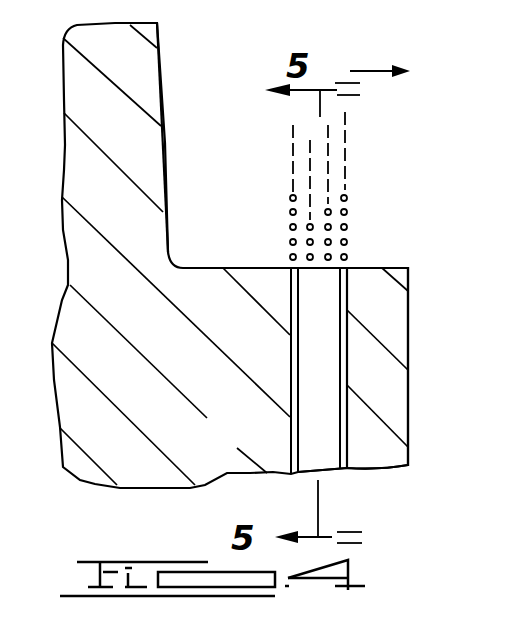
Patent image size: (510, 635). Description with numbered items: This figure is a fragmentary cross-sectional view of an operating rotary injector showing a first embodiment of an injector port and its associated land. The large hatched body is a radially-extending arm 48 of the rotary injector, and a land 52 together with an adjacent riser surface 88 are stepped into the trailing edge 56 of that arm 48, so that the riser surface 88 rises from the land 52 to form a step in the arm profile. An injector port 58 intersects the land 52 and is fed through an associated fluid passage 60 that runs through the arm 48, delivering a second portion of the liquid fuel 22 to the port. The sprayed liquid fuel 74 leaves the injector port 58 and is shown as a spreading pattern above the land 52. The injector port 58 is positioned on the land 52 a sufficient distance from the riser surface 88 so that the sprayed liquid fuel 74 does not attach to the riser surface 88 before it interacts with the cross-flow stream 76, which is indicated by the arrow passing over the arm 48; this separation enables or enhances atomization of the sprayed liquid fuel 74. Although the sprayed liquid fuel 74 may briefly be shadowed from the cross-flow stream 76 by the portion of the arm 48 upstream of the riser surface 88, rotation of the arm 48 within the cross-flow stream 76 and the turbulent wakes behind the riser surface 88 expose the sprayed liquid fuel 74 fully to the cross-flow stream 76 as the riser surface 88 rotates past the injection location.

The liquid fuel 22 is at (290, 437).
The radially-extending arm 48 is at (78, 138).
The land 52 is at (385, 268).
The trailing edge 56 is at (412, 355).
The injector port 58 is at (291, 264).
The fluid passage 60 is at (338, 474).
The sprayed liquid fuel 74 is at (362, 213).
The cross-flow stream 76 is at (373, 70).
The riser surface 88 is at (163, 148).